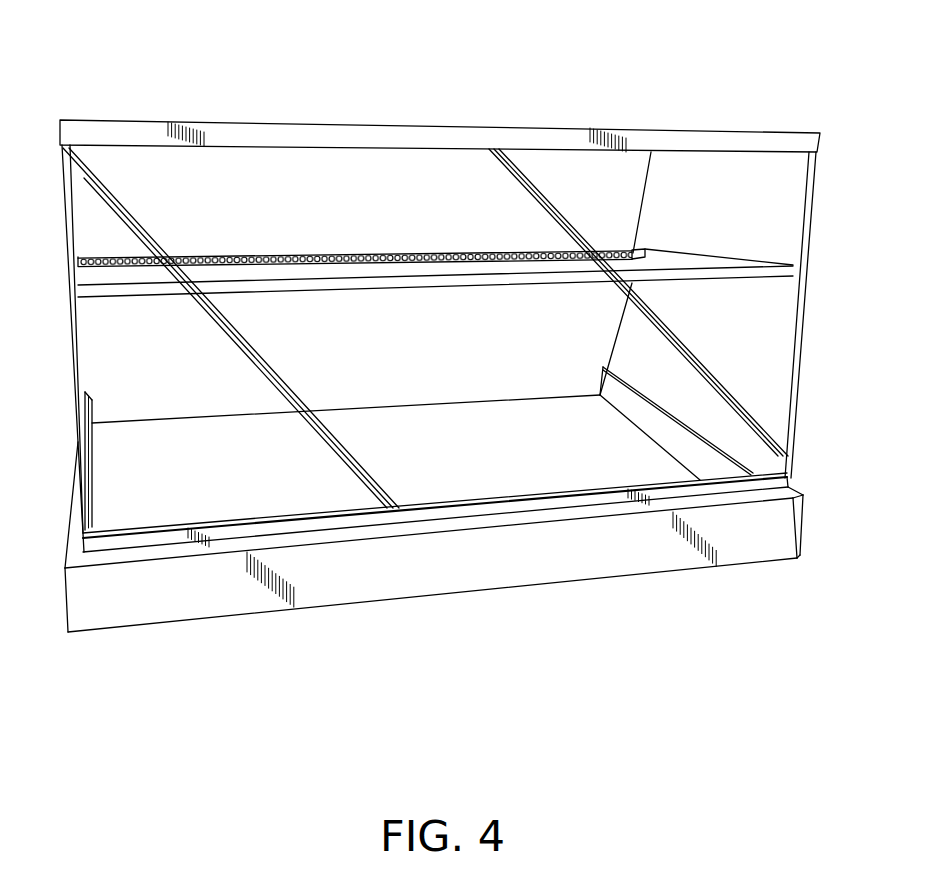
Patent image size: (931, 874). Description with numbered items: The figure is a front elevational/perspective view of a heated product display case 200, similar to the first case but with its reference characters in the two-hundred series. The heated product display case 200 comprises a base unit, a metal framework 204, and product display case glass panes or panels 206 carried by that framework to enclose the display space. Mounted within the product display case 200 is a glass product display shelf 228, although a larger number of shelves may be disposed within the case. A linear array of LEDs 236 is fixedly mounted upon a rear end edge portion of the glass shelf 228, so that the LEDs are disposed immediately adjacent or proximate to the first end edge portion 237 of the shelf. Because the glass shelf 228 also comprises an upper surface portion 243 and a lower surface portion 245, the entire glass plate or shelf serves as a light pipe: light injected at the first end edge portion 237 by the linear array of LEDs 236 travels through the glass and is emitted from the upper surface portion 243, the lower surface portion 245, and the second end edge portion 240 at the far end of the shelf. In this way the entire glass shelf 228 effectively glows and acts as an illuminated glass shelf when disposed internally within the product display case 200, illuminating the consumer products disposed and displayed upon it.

The heated product display case 200 is at (102, 666).
The metal framework 204 is at (493, 140).
The product display case glass panes or panels 206 is at (735, 347).
The glass product display shelf 228 is at (295, 273).
The linear array of LEDs 236 is at (252, 257).
The first end edge portion 237 is at (82, 257).
The second end edge portion 240 is at (465, 283).
The upper surface portion 243 is at (621, 267).
The lower surface portion 245 is at (583, 283).